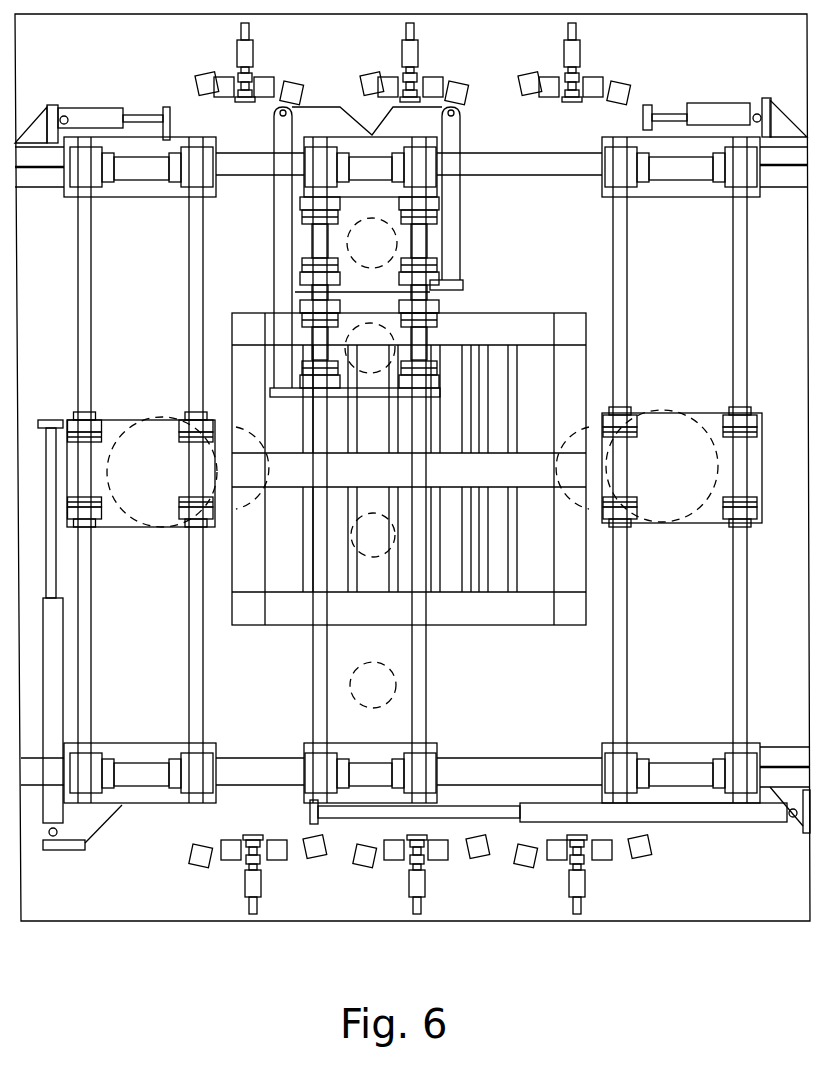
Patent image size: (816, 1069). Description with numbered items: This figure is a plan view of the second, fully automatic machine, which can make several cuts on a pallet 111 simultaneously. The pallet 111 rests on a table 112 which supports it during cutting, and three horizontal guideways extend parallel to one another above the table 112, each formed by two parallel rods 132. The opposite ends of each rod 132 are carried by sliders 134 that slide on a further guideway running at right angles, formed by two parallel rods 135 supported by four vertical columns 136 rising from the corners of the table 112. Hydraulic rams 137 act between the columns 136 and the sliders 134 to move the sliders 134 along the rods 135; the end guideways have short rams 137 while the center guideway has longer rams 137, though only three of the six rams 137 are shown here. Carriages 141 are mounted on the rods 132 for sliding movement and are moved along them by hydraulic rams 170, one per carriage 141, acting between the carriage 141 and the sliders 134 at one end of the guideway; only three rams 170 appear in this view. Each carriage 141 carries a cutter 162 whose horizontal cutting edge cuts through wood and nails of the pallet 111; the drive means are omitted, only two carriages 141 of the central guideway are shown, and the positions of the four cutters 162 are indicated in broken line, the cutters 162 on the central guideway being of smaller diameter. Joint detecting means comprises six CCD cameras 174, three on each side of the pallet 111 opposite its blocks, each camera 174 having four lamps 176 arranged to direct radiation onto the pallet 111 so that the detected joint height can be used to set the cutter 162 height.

The pallet 111 is at (563, 608).
The table 112 is at (122, 897).
The rods 132 is at (195, 283).
The sliders 134 is at (140, 193).
The rods 135 is at (545, 155).
The vertical columns 136 is at (787, 760).
The hydraulic rams 137 is at (103, 108).
The carriages 141 is at (298, 252).
The cutter 162 is at (427, 245).
The hydraulic rams 170 is at (453, 200).
The CCD cameras 174 is at (237, 50).
The lamps 176 is at (232, 862).